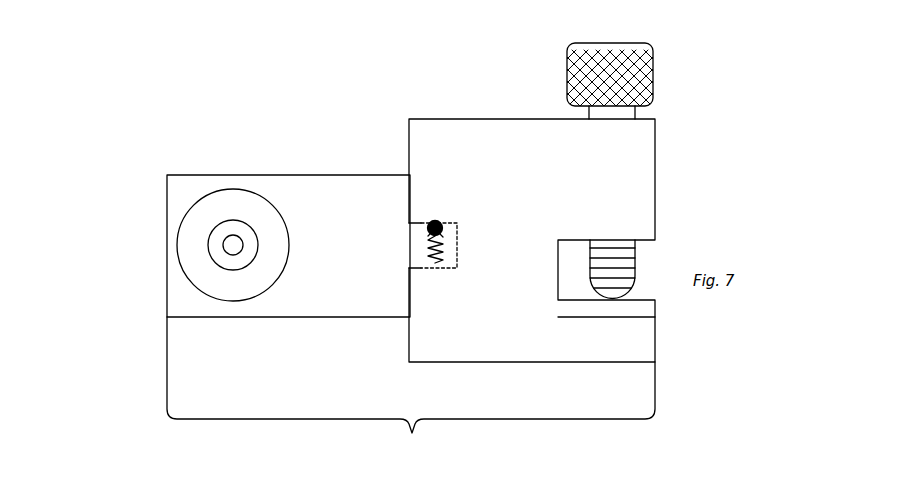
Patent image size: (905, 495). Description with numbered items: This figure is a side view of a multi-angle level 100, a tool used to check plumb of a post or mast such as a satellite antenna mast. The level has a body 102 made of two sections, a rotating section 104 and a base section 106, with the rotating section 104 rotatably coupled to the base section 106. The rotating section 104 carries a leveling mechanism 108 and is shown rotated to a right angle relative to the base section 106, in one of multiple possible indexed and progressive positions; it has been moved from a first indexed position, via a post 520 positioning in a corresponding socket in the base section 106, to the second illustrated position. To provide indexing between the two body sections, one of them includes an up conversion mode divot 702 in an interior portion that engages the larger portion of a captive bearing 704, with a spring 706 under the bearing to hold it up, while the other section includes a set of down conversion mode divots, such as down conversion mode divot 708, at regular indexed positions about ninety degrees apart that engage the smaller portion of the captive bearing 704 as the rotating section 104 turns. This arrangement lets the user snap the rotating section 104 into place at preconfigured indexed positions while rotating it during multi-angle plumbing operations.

The multi-angle level 100 is at (130, 92).
The body 102 is at (411, 392).
The rotating section 104 is at (305, 197).
The base section 106 is at (633, 167).
The leveling mechanism 108 is at (217, 246).
The post 520 is at (418, 270).
The up conversion mode divot 702 is at (427, 232).
The captive bearing 704 is at (444, 234).
The spring 706 is at (428, 254).
The down conversion mode divot 708 is at (440, 224).